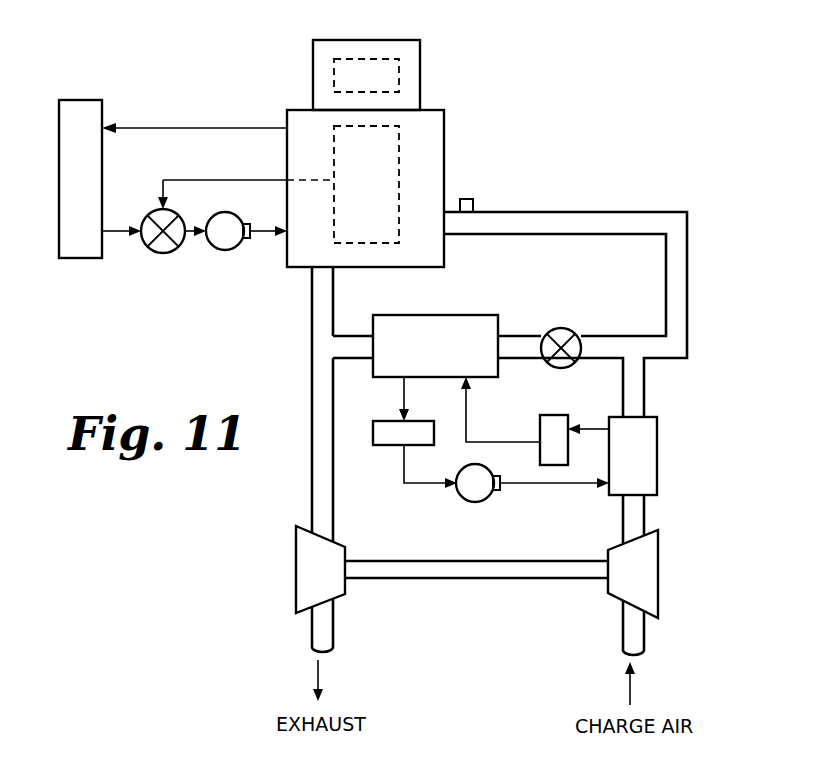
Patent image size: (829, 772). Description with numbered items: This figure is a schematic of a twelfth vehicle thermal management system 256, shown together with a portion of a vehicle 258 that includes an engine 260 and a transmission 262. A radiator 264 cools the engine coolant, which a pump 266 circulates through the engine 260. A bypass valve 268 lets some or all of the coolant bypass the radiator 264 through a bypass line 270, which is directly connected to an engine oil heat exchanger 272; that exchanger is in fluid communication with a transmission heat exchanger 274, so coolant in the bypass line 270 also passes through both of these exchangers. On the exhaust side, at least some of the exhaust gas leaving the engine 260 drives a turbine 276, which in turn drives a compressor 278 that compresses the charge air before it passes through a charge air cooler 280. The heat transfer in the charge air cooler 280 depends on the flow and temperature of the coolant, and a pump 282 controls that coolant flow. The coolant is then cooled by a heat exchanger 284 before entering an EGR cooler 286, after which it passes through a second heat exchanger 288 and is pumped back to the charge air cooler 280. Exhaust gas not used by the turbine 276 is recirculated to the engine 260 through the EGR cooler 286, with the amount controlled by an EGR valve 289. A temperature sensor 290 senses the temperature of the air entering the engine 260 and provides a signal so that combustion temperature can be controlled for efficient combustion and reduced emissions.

The vehicle thermal management system 256 is at (686, 124).
The vehicle 258 is at (522, 83).
The engine 260 is at (444, 158).
The transmission 262 is at (420, 62).
The radiator 264 is at (83, 100).
The pump 266 is at (228, 250).
The bypass valve 268 is at (163, 253).
The bypass line 270 is at (250, 180).
The engine oil heat exchanger 272 is at (399, 152).
The transmission heat exchanger 274 is at (334, 72).
The turbine 276 is at (296, 573).
The compressor 278 is at (658, 578).
The charge air cooler 280 is at (657, 464).
The pump 282 is at (478, 503).
The heat exchanger 284 is at (540, 429).
The EGR cooler 286 is at (462, 315).
The second heat exchanger 288 is at (386, 445).
The EGR valve 289 is at (565, 328).
The temperature sensor 290 is at (473, 204).